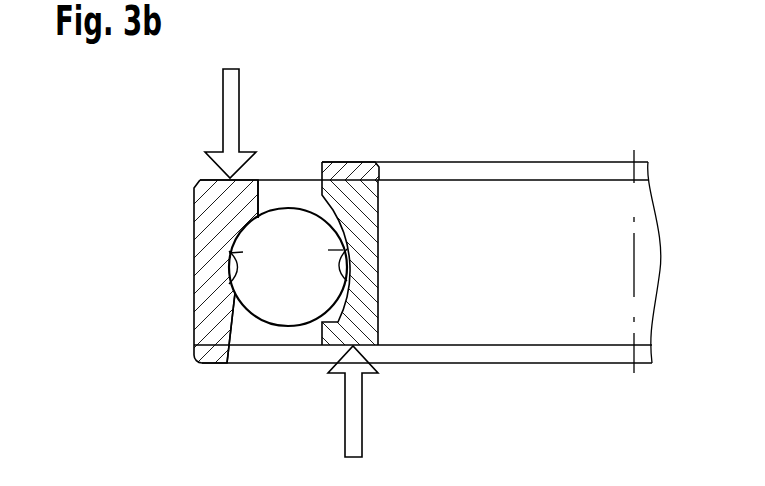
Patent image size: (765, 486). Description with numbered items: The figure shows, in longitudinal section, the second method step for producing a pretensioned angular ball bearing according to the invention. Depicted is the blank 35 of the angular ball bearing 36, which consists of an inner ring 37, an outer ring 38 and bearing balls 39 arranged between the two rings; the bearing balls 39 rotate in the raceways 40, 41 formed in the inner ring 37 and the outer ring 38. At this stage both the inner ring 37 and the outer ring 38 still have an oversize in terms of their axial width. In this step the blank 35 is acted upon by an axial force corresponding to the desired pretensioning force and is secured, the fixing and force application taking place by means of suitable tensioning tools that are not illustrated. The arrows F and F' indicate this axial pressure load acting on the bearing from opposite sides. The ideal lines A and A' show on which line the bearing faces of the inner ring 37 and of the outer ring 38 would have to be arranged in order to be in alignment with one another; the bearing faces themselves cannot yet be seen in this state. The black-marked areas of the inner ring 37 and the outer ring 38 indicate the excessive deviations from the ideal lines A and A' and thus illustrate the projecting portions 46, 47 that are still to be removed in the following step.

The blank 35 is at (296, 124).
The angular ball bearing 36 is at (166, 166).
The inner ring 37 is at (370, 198).
The outer ring 38 is at (220, 217).
The bearing balls 39 is at (278, 287).
The raceway 40 is at (350, 267).
The raceway 41 is at (230, 280).
The projecting portion 46 is at (350, 178).
The projecting portion 47 is at (210, 357).
The ideal line A is at (427, 230).
The ideal line A' is at (487, 388).
The arrow F is at (230, 106).
The arrow F' is at (353, 416).